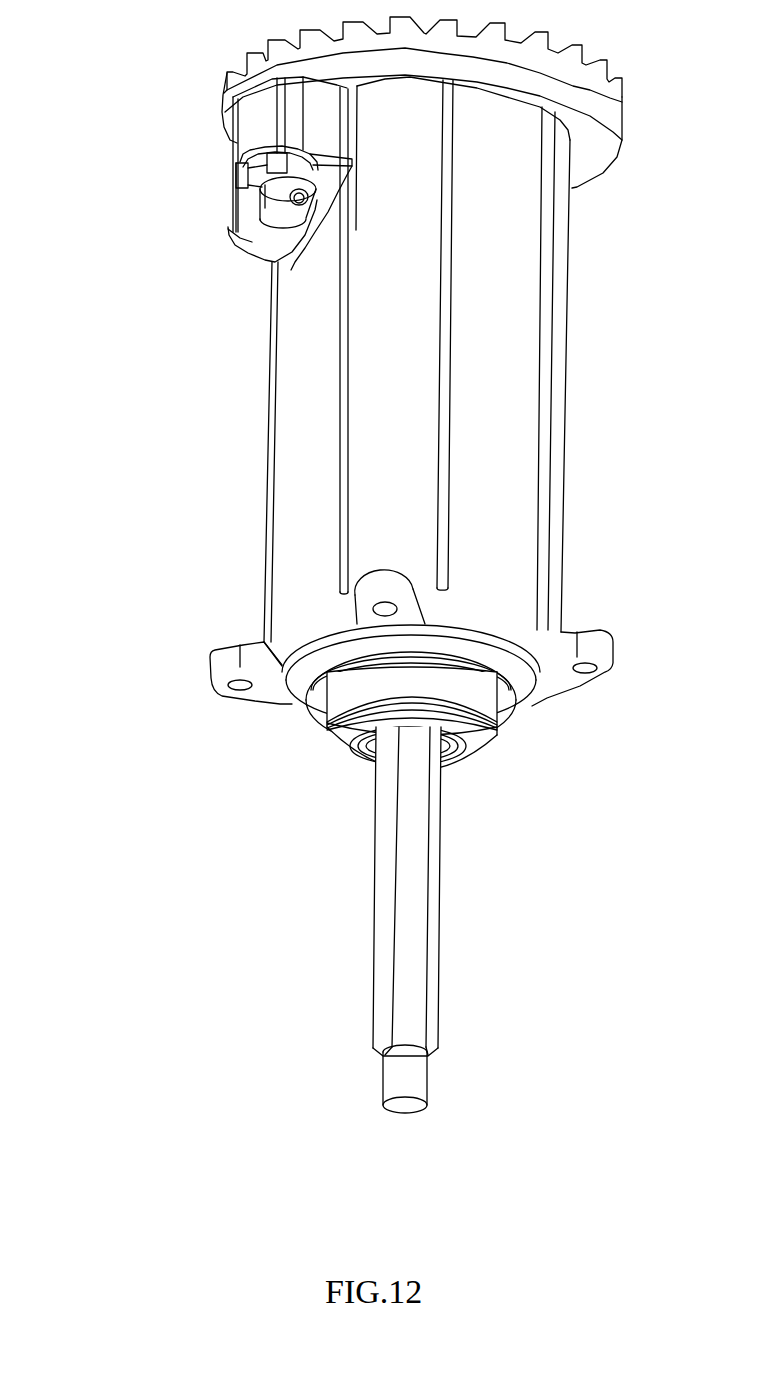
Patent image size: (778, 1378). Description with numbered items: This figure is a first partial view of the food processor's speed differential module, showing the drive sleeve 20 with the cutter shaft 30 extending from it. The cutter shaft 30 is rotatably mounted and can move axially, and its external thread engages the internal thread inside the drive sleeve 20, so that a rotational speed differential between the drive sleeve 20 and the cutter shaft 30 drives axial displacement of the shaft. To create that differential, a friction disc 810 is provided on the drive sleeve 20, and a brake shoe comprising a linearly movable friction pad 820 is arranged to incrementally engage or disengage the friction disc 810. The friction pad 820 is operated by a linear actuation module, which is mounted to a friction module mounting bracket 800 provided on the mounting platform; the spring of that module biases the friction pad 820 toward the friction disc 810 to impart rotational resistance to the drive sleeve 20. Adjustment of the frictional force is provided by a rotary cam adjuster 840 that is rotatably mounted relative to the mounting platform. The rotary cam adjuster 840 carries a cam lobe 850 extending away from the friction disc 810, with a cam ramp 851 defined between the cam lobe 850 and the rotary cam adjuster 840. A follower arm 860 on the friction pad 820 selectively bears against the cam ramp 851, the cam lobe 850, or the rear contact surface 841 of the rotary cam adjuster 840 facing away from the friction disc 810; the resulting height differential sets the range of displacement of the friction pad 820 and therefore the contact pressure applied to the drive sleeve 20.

The drive sleeve 20 is at (458, 748).
The cutter shaft 30 is at (407, 867).
The friction module mounting bracket 800 is at (322, 258).
The friction disc 810 is at (248, 83).
The friction pad 820 is at (278, 198).
The rotary cam adjuster 840 is at (262, 168).
The rear contact surface 841 is at (258, 184).
The cam lobe 850 is at (276, 262).
The cam ramp 851 is at (282, 233).
The follower arm 860 is at (301, 212).